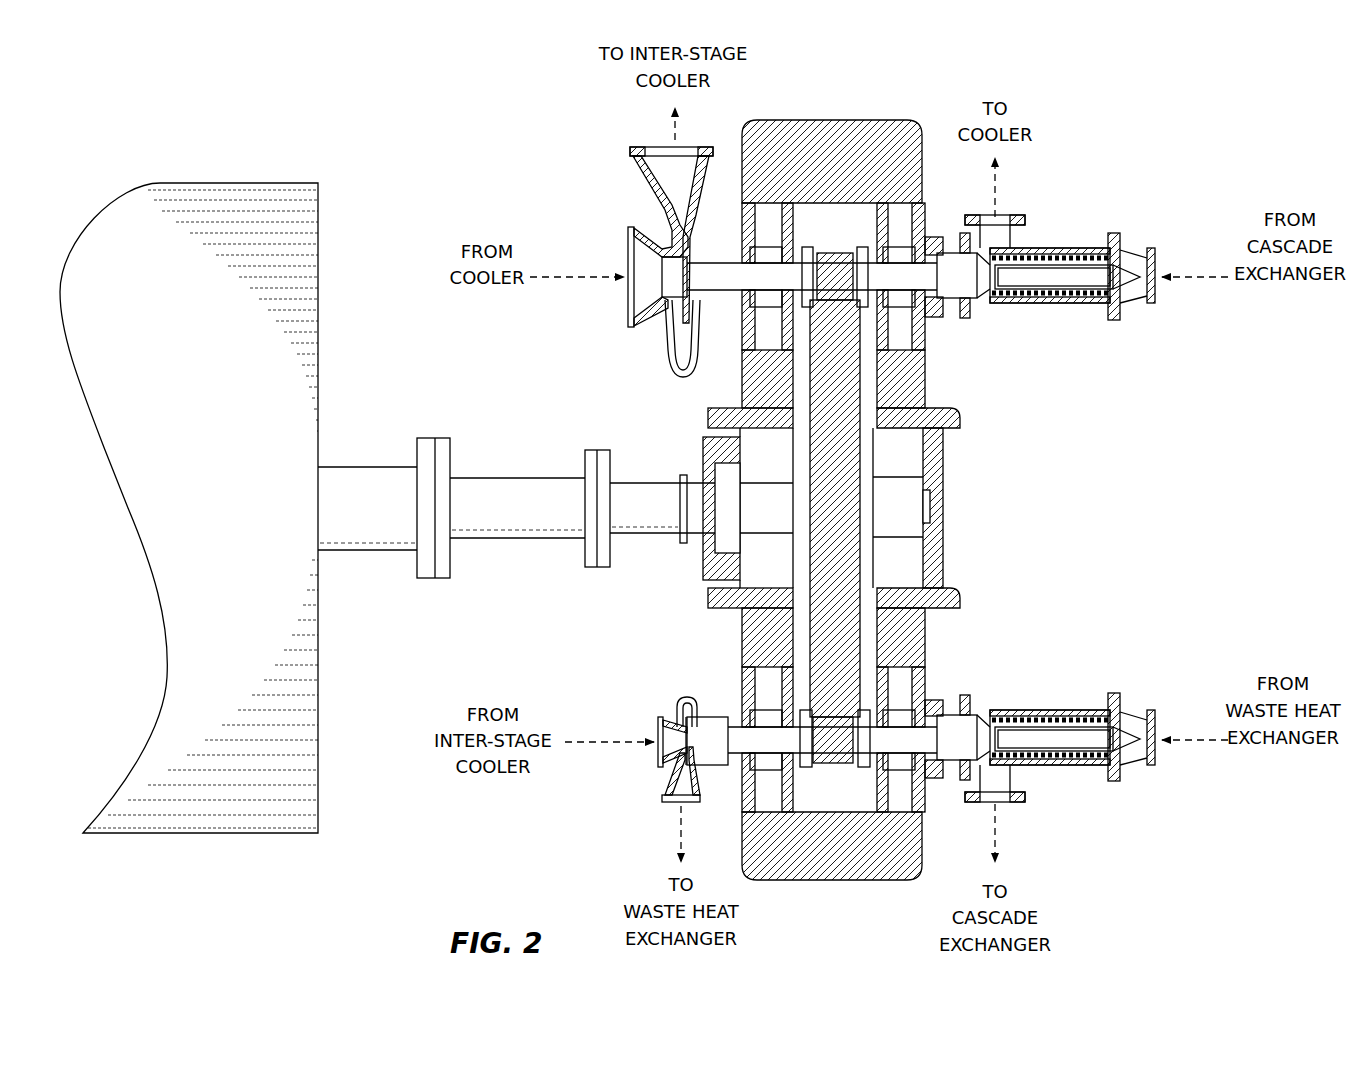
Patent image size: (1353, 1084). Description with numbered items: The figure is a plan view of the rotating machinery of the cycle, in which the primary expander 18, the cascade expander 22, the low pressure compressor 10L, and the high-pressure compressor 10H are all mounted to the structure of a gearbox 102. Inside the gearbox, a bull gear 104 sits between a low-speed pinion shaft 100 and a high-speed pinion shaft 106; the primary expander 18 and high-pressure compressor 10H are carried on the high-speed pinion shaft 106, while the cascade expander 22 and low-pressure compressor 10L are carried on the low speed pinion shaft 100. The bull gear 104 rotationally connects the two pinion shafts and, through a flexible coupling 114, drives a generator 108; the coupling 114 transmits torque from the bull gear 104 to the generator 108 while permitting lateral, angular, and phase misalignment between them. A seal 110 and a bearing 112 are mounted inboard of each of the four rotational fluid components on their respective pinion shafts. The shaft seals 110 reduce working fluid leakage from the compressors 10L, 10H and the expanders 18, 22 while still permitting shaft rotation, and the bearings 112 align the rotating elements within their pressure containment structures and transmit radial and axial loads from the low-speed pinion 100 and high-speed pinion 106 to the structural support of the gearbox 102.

The low pressure compressor 10L is at (630, 240).
The high-pressure compressor 10H is at (660, 730).
The primary expander 18 is at (1043, 768).
The cascade expander 22 is at (1048, 250).
The low-speed pinion shaft 100 is at (895, 283).
The gearbox 102 is at (877, 119).
The bull gear 104 is at (852, 436).
The high-speed pinion shaft 106 is at (903, 740).
The generator 108 is at (196, 493).
The seal 110 is at (702, 278).
The bearing 112 is at (903, 247).
The coupling 114 is at (482, 484).